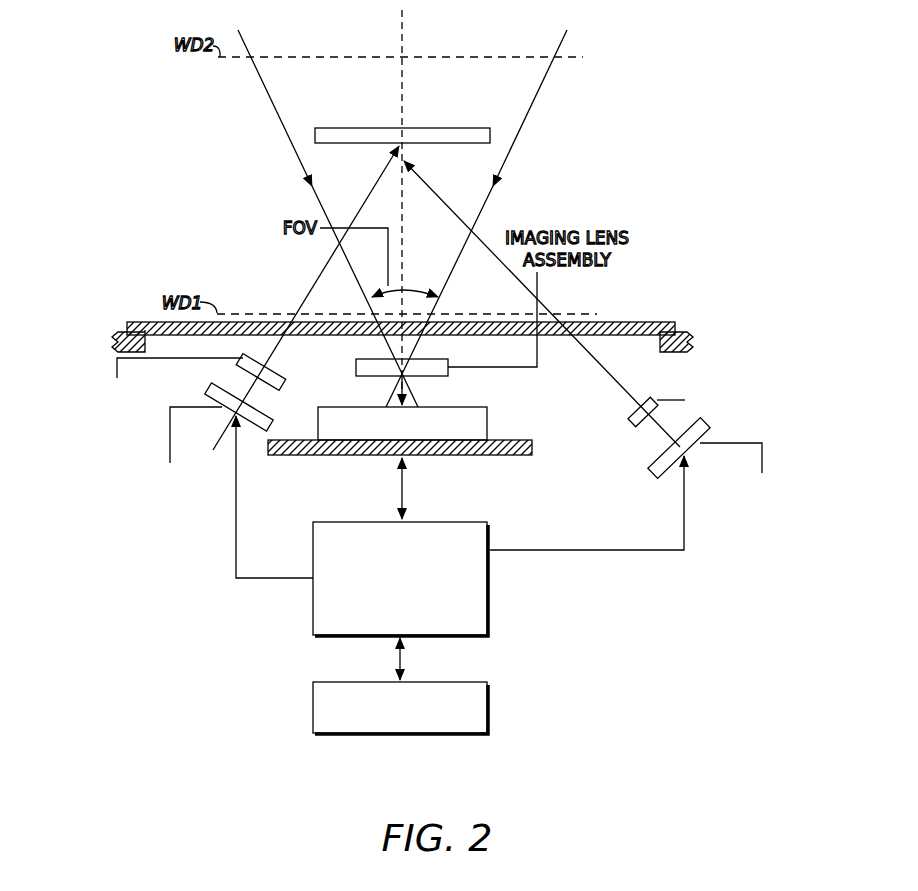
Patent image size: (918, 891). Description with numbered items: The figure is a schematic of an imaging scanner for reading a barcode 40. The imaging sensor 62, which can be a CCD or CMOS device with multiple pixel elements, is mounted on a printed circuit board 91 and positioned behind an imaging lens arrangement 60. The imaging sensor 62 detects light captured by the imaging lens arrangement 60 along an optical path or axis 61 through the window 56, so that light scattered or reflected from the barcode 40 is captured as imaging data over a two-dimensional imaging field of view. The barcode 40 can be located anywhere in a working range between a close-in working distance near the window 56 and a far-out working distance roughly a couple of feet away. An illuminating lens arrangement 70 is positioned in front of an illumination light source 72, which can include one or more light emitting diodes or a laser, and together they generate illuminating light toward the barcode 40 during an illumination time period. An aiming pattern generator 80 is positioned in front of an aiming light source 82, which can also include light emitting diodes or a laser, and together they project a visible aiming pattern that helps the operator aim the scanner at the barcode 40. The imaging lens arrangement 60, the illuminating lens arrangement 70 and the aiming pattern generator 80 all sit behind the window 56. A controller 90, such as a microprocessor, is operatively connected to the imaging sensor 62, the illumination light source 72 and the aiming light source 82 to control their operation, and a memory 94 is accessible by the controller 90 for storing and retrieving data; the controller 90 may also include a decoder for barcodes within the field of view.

The barcode 40 is at (458, 128).
The optical path or axis 61 is at (404, 30).
The window 56 is at (136, 322).
The imaging lens arrangement 60 is at (356, 368).
The imaging sensor 62 is at (475, 404).
The printed circuit board 91 is at (450, 457).
The controller 90 is at (474, 521).
The memory 94 is at (474, 681).
The aiming pattern generator 80 is at (93, 375).
The aiming light source 82 is at (163, 507).
The illuminating lens arrangement 70 is at (772, 367).
The illumination light source 72 is at (767, 538).